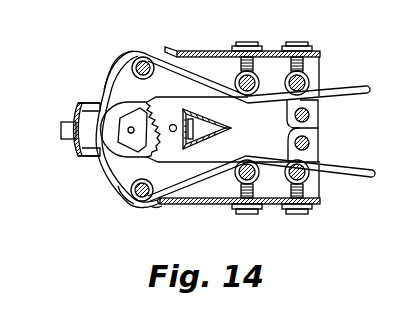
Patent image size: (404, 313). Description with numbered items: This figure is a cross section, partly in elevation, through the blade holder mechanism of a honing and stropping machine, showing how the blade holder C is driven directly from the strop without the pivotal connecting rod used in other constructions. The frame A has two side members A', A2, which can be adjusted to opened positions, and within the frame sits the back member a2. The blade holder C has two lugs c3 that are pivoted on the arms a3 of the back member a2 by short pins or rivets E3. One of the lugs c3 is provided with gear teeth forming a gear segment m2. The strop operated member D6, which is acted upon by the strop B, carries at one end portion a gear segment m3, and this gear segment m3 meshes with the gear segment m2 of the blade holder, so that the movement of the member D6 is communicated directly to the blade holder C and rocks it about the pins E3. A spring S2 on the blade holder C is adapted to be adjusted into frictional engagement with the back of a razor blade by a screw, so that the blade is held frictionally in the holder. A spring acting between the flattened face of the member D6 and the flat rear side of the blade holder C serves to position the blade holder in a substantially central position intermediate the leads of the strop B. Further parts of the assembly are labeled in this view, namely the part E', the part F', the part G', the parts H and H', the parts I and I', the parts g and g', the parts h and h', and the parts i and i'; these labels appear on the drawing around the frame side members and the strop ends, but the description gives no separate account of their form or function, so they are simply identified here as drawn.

The frame A is at (126, 56).
The side member of the frame A' is at (242, 31).
The side member of the frame A2 is at (207, 205).
The strop B is at (363, 86).
The blade holder C is at (222, 142).
The strop operated member D6 is at (113, 139).
The strap E' is at (125, 133).
The short pins or rivets E3 is at (174, 124).
The upper lug pin F' is at (317, 113).
The lower lug pin G' is at (321, 145).
The upper right bolt H is at (314, 56).
The lower right bolt H' is at (318, 195).
The upper left bolt I is at (258, 46).
The lower left bolt I' is at (254, 214).
The spring S2 is at (216, 124).
The back member a2 is at (79, 151).
The arms of the back member a3 is at (95, 112).
The lugs of the blade holder c3 is at (160, 207).
The upper pivot g is at (121, 65).
The lower pivot g' is at (135, 215).
The upper right eye h is at (313, 78).
The lower right eye h' is at (315, 192).
The upper left eye i is at (238, 78).
The lower left eye i' is at (237, 178).
The gear teeth of the blade holder m2 is at (133, 192).
The gear segment m3 is at (138, 118).